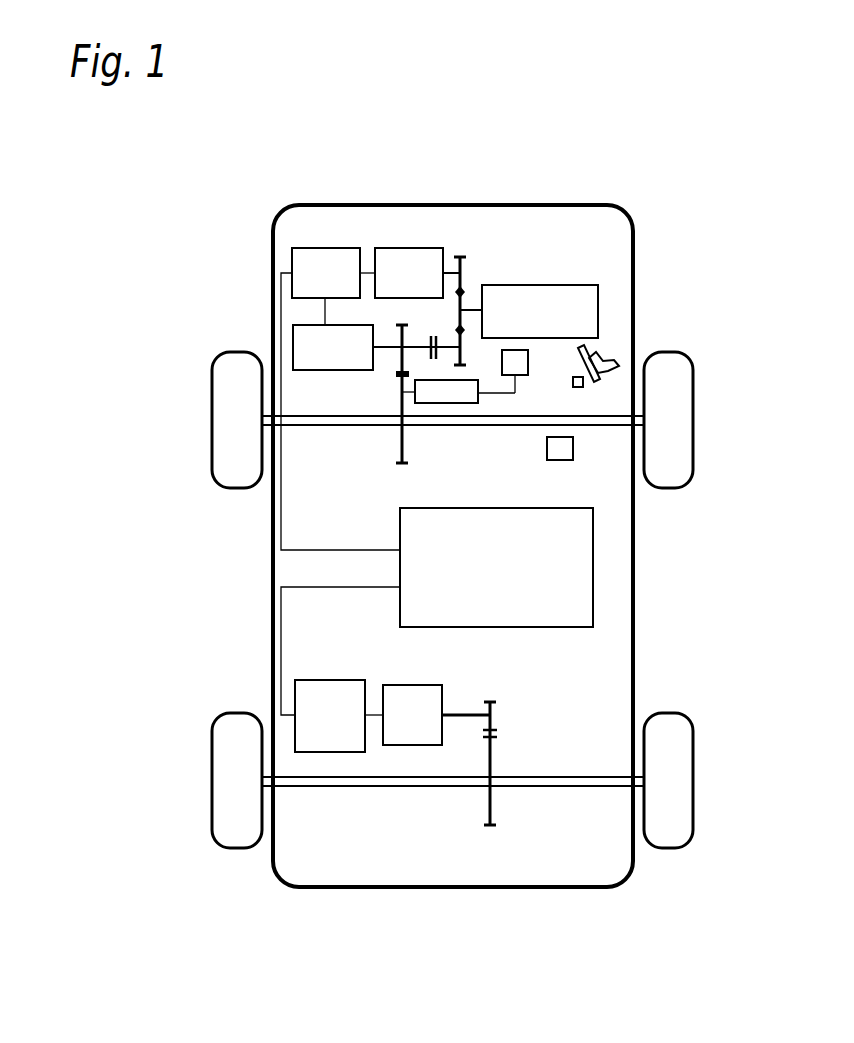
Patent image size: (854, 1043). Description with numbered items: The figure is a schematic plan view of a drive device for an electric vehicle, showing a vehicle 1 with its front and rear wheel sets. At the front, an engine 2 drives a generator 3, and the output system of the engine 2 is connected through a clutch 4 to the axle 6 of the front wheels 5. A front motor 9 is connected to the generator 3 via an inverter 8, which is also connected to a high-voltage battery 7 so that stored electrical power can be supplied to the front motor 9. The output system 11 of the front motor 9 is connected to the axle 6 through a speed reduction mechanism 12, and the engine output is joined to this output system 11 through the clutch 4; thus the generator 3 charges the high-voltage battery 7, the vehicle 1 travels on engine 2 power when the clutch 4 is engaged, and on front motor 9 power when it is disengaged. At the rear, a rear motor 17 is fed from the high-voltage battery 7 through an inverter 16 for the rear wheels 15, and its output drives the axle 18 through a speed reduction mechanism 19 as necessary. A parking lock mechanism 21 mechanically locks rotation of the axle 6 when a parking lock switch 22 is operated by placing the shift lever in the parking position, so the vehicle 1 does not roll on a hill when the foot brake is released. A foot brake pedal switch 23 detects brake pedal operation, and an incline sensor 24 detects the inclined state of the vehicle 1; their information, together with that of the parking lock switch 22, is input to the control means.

The vehicle 1 is at (674, 559).
The engine 2 is at (572, 285).
The generator 3 is at (413, 248).
The clutch 4 is at (433, 337).
The front wheels 5 is at (236, 352).
The axle 6 is at (470, 404).
The high-voltage battery 7 is at (551, 628).
The inverter 8 is at (330, 248).
The front motor 9 is at (313, 371).
The output system 11 is at (395, 365).
The speed reduction mechanism 12 is at (396, 436).
The rear wheels 15 is at (236, 848).
The inverter 16 is at (340, 680).
The rear motor 17 is at (425, 684).
The axle 18 is at (375, 787).
The speed reduction mechanism 19 is at (494, 803).
The parking lock mechanism 21 is at (425, 404).
The parking lock switch 22 is at (519, 379).
The foot brake pedal switch 23 is at (578, 390).
The incline sensor 24 is at (574, 455).